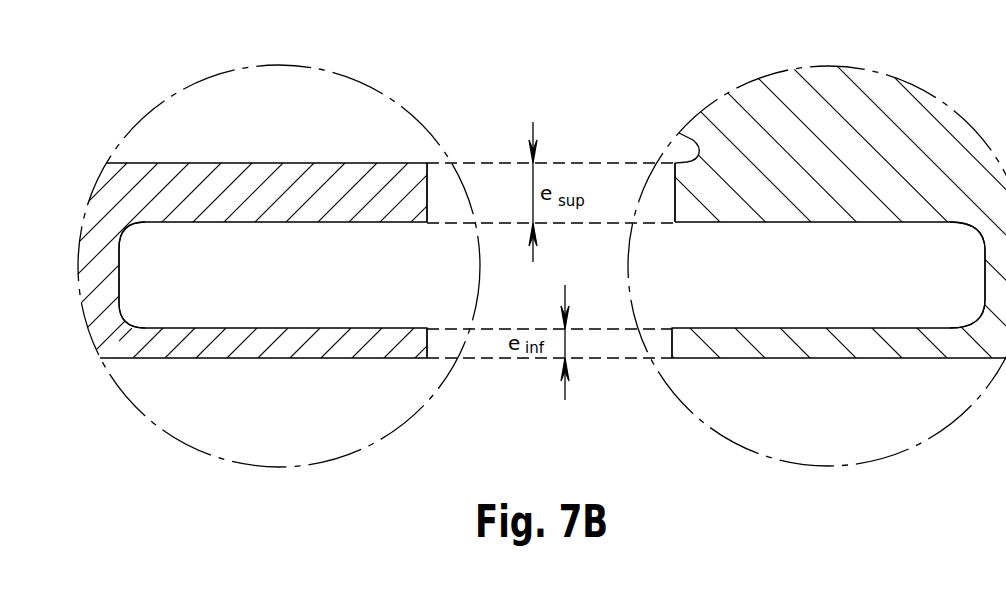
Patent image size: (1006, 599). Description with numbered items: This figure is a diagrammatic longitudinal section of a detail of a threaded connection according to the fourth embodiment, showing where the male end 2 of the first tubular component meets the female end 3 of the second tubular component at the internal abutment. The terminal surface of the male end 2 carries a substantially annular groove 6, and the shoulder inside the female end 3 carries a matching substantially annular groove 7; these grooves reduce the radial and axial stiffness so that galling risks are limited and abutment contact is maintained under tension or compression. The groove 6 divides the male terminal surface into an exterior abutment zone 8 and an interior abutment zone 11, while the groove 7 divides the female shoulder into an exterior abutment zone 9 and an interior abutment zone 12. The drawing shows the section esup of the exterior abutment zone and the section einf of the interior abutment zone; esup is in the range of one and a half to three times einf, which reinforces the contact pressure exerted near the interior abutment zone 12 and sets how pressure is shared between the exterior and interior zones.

The male end 2 is at (98, 296).
The female end 3 is at (882, 136).
The groove 6 is at (321, 281).
The groove 7 is at (786, 288).
The exterior abutment zone 8 is at (428, 197).
The exterior abutment zone 9 is at (675, 197).
The interior abutment zone 11 is at (428, 344).
The interior abutment zone 12 is at (672, 343).